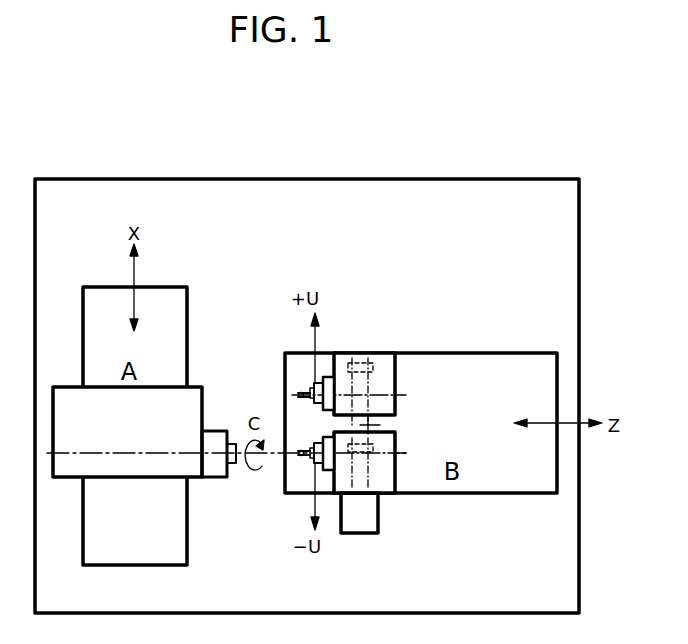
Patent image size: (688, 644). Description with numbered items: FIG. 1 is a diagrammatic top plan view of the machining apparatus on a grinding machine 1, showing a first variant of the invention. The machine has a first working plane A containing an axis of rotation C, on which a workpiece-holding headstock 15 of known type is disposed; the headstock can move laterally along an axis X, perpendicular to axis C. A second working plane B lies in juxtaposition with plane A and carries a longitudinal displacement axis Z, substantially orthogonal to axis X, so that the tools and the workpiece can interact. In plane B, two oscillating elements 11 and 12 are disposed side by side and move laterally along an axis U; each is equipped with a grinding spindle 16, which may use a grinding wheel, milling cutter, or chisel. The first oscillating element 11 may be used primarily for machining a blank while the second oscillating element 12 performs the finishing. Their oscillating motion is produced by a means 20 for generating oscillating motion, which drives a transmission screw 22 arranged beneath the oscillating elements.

The grinding machine 1 is at (580, 469).
The first oscillating element 11 is at (384, 472).
The second oscillating element 12 is at (384, 360).
The workpiece-holding headstock 15 is at (216, 465).
The grinding spindles 16 is at (310, 443).
The means for generating oscillating motion 20 is at (357, 515).
The transmission screw 22 is at (398, 423).